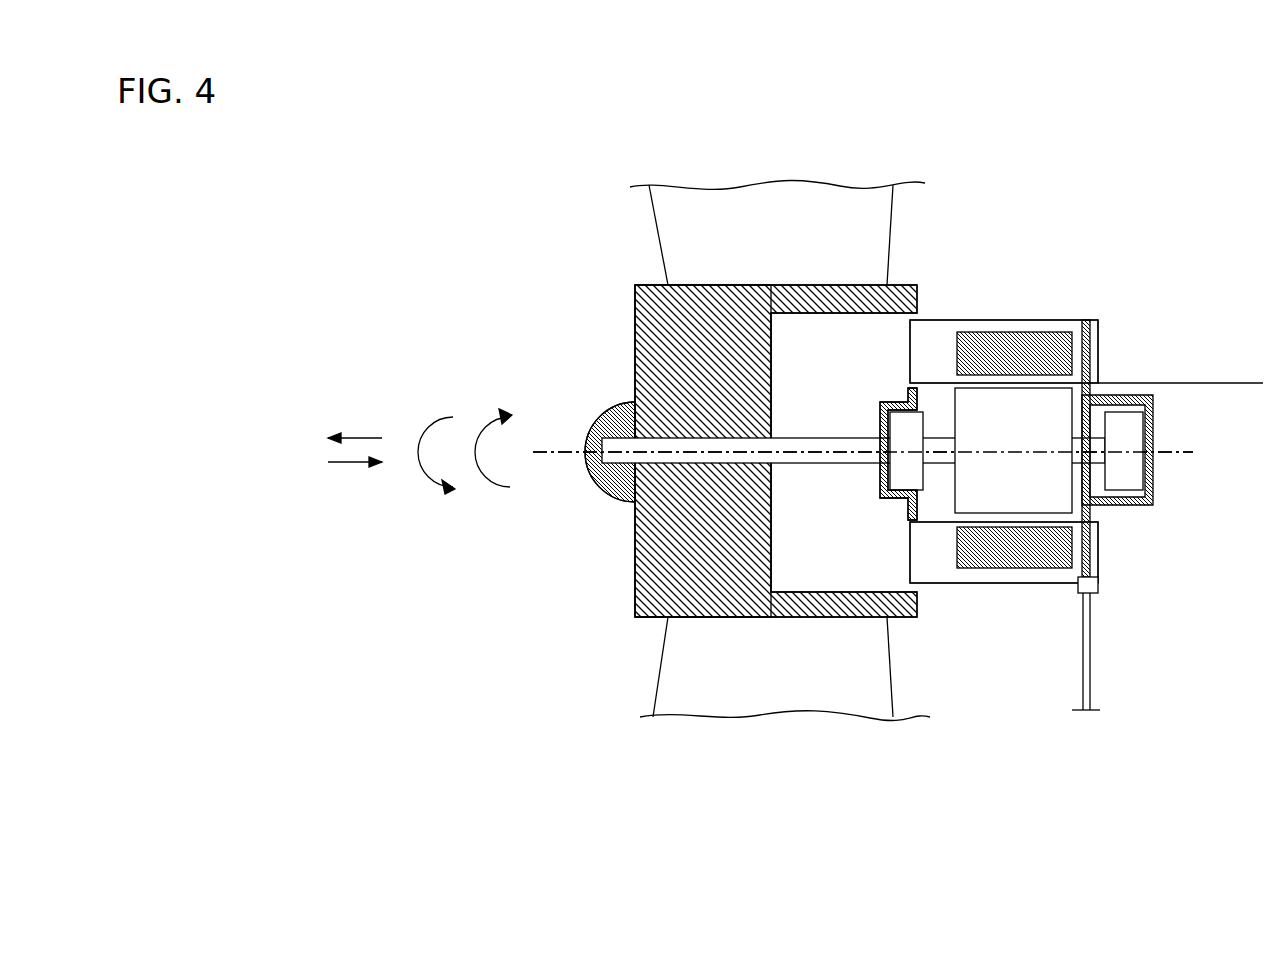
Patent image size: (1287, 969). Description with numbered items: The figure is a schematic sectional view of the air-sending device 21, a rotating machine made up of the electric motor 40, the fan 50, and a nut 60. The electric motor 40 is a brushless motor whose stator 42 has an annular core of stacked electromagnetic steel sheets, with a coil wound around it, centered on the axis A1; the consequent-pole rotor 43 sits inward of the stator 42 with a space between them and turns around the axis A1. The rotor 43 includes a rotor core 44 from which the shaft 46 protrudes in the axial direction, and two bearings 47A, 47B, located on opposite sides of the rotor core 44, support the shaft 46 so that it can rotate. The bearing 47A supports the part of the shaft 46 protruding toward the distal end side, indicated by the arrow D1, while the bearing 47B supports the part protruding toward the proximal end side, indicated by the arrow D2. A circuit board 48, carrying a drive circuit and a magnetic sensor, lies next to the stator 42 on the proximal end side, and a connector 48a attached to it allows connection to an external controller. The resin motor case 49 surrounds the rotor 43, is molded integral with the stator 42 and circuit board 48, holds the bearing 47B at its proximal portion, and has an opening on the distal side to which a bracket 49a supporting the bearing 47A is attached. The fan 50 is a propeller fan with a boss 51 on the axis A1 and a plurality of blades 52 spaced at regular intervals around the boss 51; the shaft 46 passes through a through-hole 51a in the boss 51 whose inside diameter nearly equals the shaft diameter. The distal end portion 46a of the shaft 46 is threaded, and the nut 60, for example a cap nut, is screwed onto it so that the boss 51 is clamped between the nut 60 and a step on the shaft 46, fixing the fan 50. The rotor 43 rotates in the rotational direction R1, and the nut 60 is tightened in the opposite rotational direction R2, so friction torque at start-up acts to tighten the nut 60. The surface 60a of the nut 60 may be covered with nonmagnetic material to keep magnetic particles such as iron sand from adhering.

The air-sending device 21 is at (1280, 165).
The electric motor 40 is at (1088, 407).
The stator 42 is at (982, 320).
The rotor 43 is at (1028, 325).
The rotor core 44 is at (1102, 515).
The shaft 46 is at (798, 463).
The distal end portion 46a is at (622, 500).
The bearing 47A is at (923, 492).
The bearing 47B is at (1153, 412).
The circuit board 48 is at (1100, 370).
The connector 48a is at (1097, 580).
The motor case 49 is at (1017, 583).
The bracket 49a is at (882, 500).
The fan 50 is at (635, 303).
The boss 51 is at (635, 350).
The through-hole 51a is at (747, 512).
The blades 52 is at (680, 240).
The nut 60 is at (590, 490).
The surface 60a is at (605, 497).
The axis A1 is at (1185, 467).
The arrow D1 is at (358, 435).
The arrow D2 is at (358, 466).
The rotational direction R1 is at (492, 415).
The rotational direction R2 is at (440, 415).